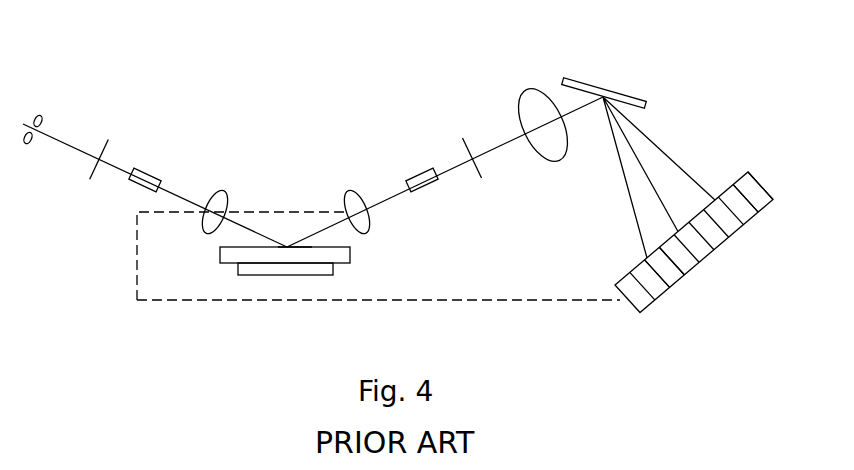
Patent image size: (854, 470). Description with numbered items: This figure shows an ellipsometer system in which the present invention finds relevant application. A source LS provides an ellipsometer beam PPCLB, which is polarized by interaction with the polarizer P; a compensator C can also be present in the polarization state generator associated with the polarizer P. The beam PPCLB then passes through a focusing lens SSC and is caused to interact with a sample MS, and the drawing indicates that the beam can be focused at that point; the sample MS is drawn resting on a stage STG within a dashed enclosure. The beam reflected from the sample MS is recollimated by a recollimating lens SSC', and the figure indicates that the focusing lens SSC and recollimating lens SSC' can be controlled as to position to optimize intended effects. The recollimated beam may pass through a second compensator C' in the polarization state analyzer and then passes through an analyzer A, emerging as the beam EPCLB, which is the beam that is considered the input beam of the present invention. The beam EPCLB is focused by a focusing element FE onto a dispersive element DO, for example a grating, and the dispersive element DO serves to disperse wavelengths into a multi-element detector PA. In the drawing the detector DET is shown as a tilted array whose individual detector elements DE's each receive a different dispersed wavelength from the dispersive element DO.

The source LS is at (38, 104).
The polarizer P is at (100, 148).
The ellipsometer beam PPCLB is at (125, 158).
The compensator C is at (171, 166).
The focusing lens SSC is at (233, 178).
The sample MS is at (308, 243).
The stage STG is at (272, 277).
The compensator C' is at (396, 166).
The recollimating lens SSC' is at (401, 227).
The analyzer A is at (460, 147).
The beam exiting the polarization state analyzer EPCLB is at (495, 137).
The focusing element FE is at (543, 161).
The dispersive element DO is at (608, 82).
The detector DET is at (724, 185).
The multi-element detector PA is at (628, 266).
The detector elements DE's is at (711, 239).